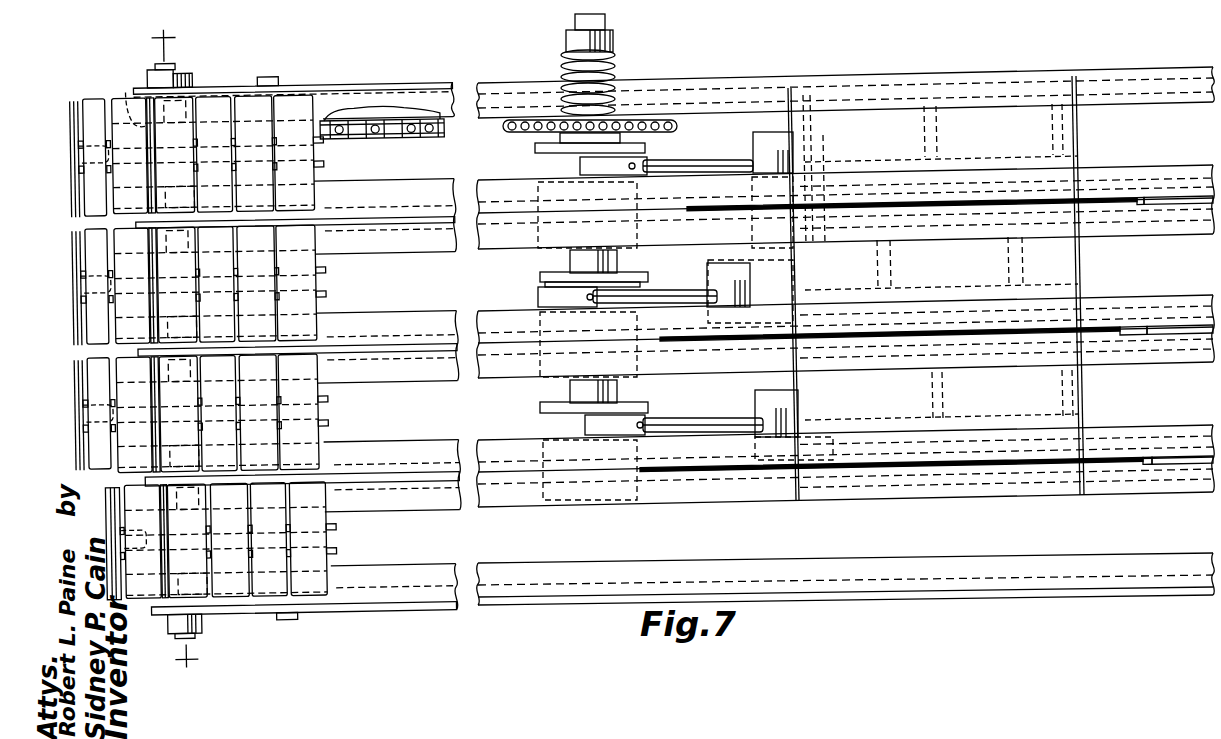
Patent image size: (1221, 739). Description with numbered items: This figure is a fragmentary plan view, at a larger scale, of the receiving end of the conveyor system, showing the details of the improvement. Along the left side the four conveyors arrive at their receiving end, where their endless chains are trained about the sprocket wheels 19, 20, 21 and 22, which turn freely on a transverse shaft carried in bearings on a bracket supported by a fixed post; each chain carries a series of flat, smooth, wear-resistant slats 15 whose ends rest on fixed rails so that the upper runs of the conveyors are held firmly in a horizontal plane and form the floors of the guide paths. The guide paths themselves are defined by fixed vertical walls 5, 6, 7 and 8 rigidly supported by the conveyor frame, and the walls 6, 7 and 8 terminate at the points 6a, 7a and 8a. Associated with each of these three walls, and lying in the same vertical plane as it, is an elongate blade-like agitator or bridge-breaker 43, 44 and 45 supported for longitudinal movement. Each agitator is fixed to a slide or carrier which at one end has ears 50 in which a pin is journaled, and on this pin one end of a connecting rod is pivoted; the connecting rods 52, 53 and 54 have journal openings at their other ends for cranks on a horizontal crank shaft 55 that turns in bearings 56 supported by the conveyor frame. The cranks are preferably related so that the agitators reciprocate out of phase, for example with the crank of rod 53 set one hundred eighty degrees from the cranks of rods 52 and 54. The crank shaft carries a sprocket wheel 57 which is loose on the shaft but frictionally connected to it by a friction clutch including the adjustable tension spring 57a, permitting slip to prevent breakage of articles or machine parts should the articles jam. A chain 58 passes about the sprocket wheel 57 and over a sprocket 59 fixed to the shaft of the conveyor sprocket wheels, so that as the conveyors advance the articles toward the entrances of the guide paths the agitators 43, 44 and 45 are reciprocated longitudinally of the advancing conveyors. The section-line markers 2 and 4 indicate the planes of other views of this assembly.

The section line 2- 2 is at (179, 348).
The section line 4- 4 is at (493, 62).
The fixed vertical wall 5 is at (324, 104).
The guide wall 6 is at (1178, 200).
The guide wall terminating point 6a is at (1143, 194).
The guide wall 7 is at (1180, 331).
The guide wall terminating point 7a is at (1148, 330).
The guide wall 8 is at (1180, 460).
The guide wall terminating point 8a is at (1145, 460).
The slats 15 is at (97, 190).
The sprocket wheel 19 is at (90, 137).
The sprocket wheel 20 is at (100, 263).
The sprocket wheel 21 is at (95, 392).
The sprocket wheel 22 is at (131, 540).
The agitator or bridge-breaker 43 is at (990, 198).
The agitator or bridge-breaker 44 is at (948, 332).
The agitator or bridge-breaker 45 is at (1000, 470).
The ears 50 is at (771, 394).
The connecting rod 52 is at (682, 168).
The connecting rod 53 is at (693, 285).
The connecting rod 54 is at (724, 412).
The crank shaft 55 is at (612, 268).
The bearings 56 is at (685, 341).
The sprocket wheel 57 is at (590, 96).
The adjustable tension spring 57a is at (612, 58).
The chain 58 is at (355, 126).
The sprocket 59 is at (145, 95).